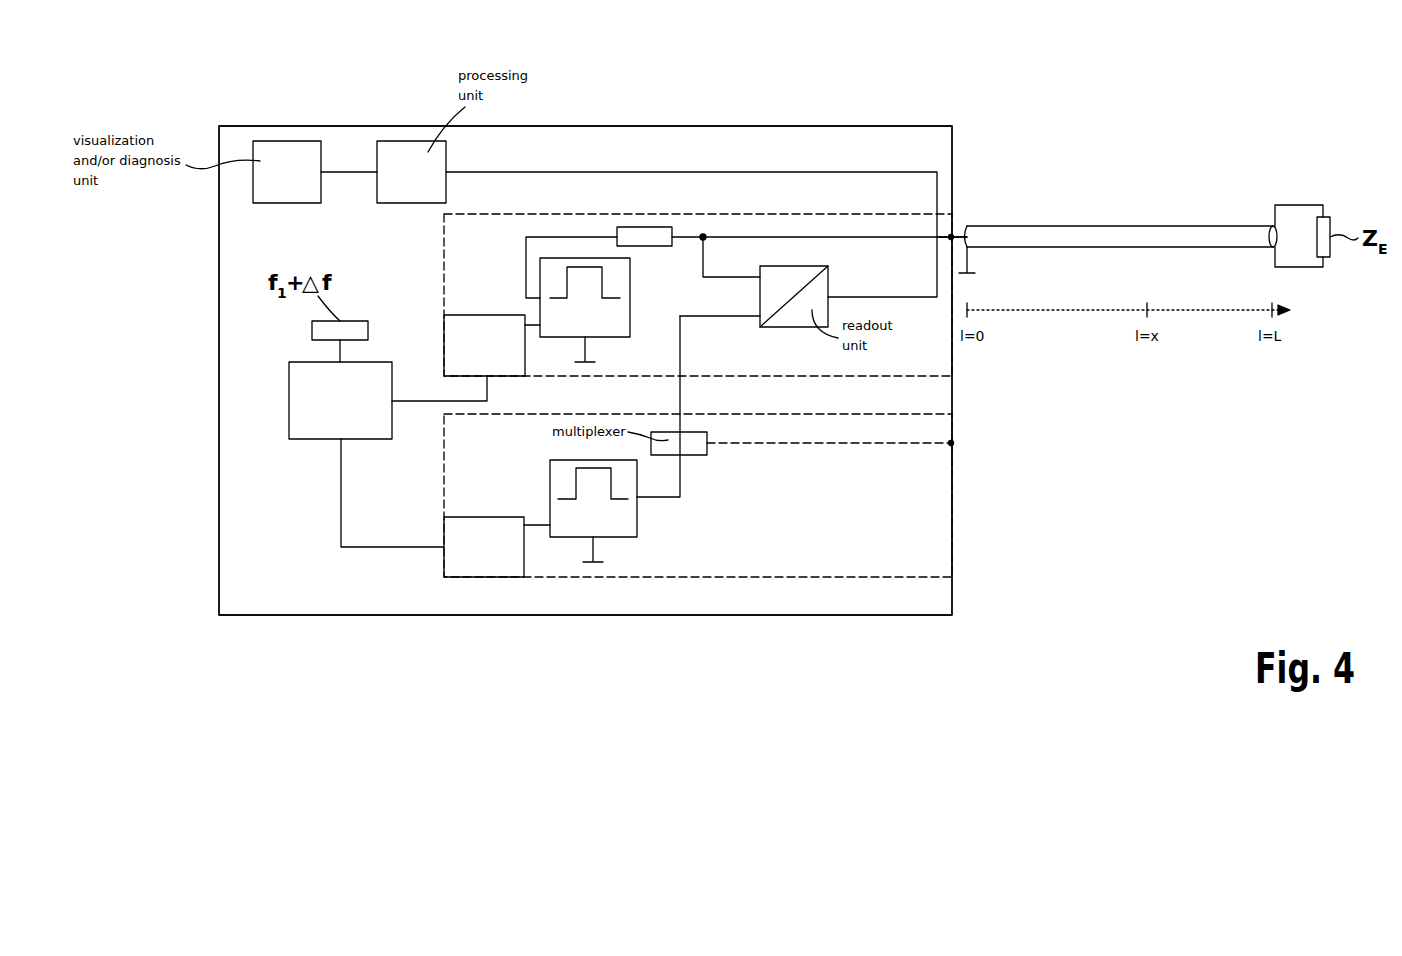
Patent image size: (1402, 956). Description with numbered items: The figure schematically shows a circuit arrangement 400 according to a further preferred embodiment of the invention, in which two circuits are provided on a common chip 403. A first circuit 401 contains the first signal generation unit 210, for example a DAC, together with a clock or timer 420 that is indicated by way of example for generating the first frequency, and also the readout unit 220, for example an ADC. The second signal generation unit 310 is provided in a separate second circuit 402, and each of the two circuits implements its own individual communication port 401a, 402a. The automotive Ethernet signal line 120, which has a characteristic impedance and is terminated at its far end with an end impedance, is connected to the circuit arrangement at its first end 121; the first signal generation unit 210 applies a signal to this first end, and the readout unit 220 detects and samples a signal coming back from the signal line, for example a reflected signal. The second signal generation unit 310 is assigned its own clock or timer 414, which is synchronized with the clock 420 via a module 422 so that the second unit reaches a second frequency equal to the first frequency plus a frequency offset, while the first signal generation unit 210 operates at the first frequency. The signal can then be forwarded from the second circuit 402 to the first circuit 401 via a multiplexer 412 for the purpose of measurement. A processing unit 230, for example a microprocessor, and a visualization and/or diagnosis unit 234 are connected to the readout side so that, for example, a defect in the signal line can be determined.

The circuit arrangement 400 is at (194, 103).
The common chip 403 is at (219, 371).
The visualization and/or diagnosis unit 234 is at (287, 141).
The processing unit 230 is at (410, 141).
The first circuit 401 is at (444, 264).
The clock or timer 420 is at (483, 315).
The first signal generation unit 210 is at (630, 298).
The readout unit 220 is at (828, 276).
The first end 121 is at (966, 192).
The communication port 401a is at (952, 237).
The automotive Ethernet signal line 120 is at (1103, 226).
The module 422 is at (308, 440).
The second circuit 402 is at (444, 468).
The clock or timer 414 is at (483, 517).
The second signal generation unit 310 is at (637, 522).
The multiplexer 412 is at (707, 452).
The communication port 402a is at (952, 443).